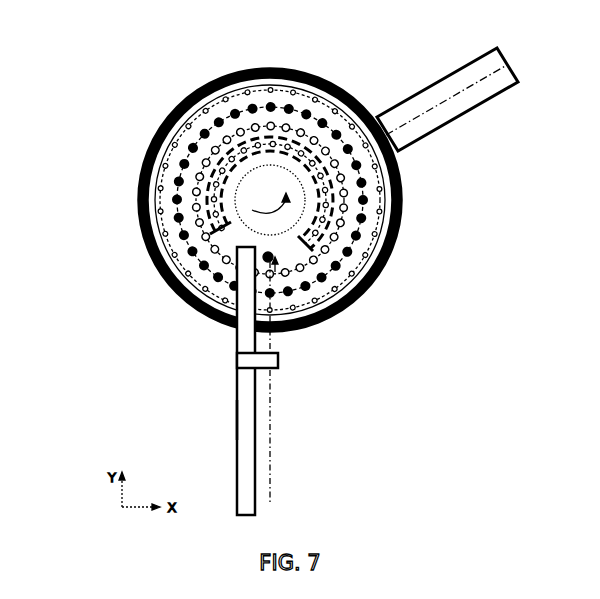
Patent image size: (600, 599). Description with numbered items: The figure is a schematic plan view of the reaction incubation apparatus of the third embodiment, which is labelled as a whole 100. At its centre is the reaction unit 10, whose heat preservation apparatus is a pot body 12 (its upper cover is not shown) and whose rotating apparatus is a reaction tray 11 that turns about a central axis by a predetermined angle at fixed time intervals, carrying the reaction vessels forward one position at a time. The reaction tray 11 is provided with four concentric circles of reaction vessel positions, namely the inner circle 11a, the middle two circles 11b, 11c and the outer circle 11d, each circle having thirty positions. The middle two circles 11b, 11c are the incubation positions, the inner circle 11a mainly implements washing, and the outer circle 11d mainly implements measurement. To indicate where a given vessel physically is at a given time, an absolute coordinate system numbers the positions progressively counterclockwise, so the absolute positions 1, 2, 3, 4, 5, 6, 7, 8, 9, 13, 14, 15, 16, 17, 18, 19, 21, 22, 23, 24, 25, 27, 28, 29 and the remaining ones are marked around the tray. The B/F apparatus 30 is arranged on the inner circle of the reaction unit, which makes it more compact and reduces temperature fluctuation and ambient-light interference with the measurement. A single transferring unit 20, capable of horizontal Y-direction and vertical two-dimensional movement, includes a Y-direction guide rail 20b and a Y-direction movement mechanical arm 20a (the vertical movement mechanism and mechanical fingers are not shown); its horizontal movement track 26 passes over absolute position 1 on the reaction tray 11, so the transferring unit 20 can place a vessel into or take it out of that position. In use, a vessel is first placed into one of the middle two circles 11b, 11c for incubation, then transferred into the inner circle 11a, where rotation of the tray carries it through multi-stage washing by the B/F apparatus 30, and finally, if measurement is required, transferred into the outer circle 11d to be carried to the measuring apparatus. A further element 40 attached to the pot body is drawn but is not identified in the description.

The sample carousel device 100 is at (401, 63).
The reaction unit 10 is at (106, 103).
The reaction tray 11 is at (167, 177).
The inner circle of reaction vessel positions 11a is at (235, 256).
The middle circle of reaction vessel positions 11b is at (212, 229).
The middle circle of reaction vessel positions 11c is at (163, 222).
The outer circle of reaction vessel positions 11d is at (137, 198).
The pot body 12 is at (82, 341).
The transferring unit 20 is at (276, 480).
The Y-direction movement mechanical arm 20a is at (279, 364).
The Y-direction guide rail 20b is at (190, 445).
The horizontal movement track 26 is at (236, 342).
The B/F apparatus 30 is at (337, 249).
The handle 40 is at (477, 115).
The absolute position 1 is at (274, 342).
The absolute position 2 is at (298, 343).
The absolute position 3 is at (328, 339).
The absolute position 4 is at (354, 326).
The absolute position 5 is at (379, 300).
The absolute position 6 is at (395, 272).
The absolute position 7 is at (407, 245).
The absolute position 8 is at (414, 217).
The absolute position 9 is at (412, 188).
The absolute position 13 is at (355, 82).
The absolute position 14 is at (329, 65).
The absolute position 15 is at (298, 57).
The absolute position 16 is at (267, 55).
The absolute position 17 is at (238, 58).
The absolute position 18 is at (210, 65).
The absolute position 19 is at (181, 83).
The absolute position 21 is at (138, 130).
The absolute position 22 is at (125, 160).
The absolute position 23 is at (120, 188).
The absolute position 24 is at (120, 215).
The absolute position 25 is at (130, 245).
The absolute position 27 is at (158, 302).
The absolute position 28 is at (181, 320).
The absolute position 29 is at (208, 337).